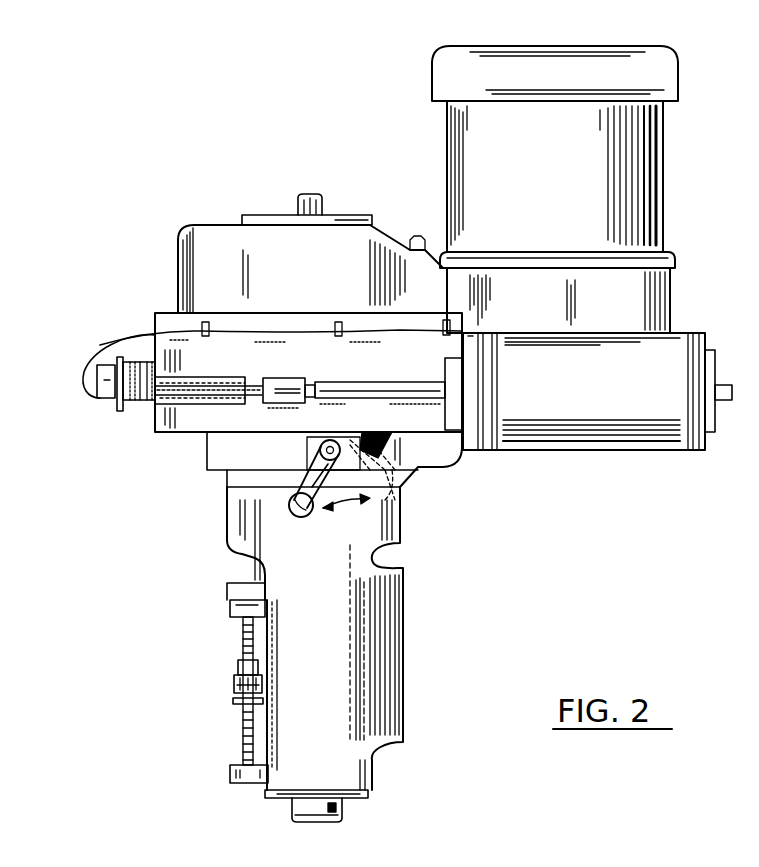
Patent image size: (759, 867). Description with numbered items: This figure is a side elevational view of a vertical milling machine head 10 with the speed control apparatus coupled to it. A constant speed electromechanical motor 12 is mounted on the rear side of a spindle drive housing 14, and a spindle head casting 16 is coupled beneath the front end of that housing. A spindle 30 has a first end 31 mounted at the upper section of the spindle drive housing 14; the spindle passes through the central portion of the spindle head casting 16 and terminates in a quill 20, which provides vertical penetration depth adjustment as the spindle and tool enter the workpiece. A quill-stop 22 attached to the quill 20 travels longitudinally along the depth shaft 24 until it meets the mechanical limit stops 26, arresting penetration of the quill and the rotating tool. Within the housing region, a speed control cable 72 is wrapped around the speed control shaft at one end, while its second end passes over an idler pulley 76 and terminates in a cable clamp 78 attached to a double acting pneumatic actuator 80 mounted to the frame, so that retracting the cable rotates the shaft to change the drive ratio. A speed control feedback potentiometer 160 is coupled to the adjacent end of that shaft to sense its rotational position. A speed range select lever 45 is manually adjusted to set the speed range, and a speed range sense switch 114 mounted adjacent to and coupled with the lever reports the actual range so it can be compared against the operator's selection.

The vertical milling machine head 10 is at (172, 215).
The constant speed electromechanical motor 12 is at (552, 221).
The spindle drive housing 14 is at (325, 282).
The spindle head casting 16 is at (386, 694).
The quill 20 is at (350, 802).
The quill-stop 22 is at (233, 606).
The depth shaft 24 is at (243, 722).
The mechanical limit stops 26 is at (240, 680).
The spindle 30 is at (280, 815).
The first end 31 is at (320, 198).
The speed range select lever 45 is at (262, 490).
The speed control cable 72 is at (255, 384).
The idler pulley 76 is at (217, 396).
The cable clamp 78 is at (305, 378).
The double acting pneumatic actuator 80 is at (602, 400).
The speed range sense switch 114 is at (421, 470).
The speed control feedback potentiometer 160 is at (100, 398).